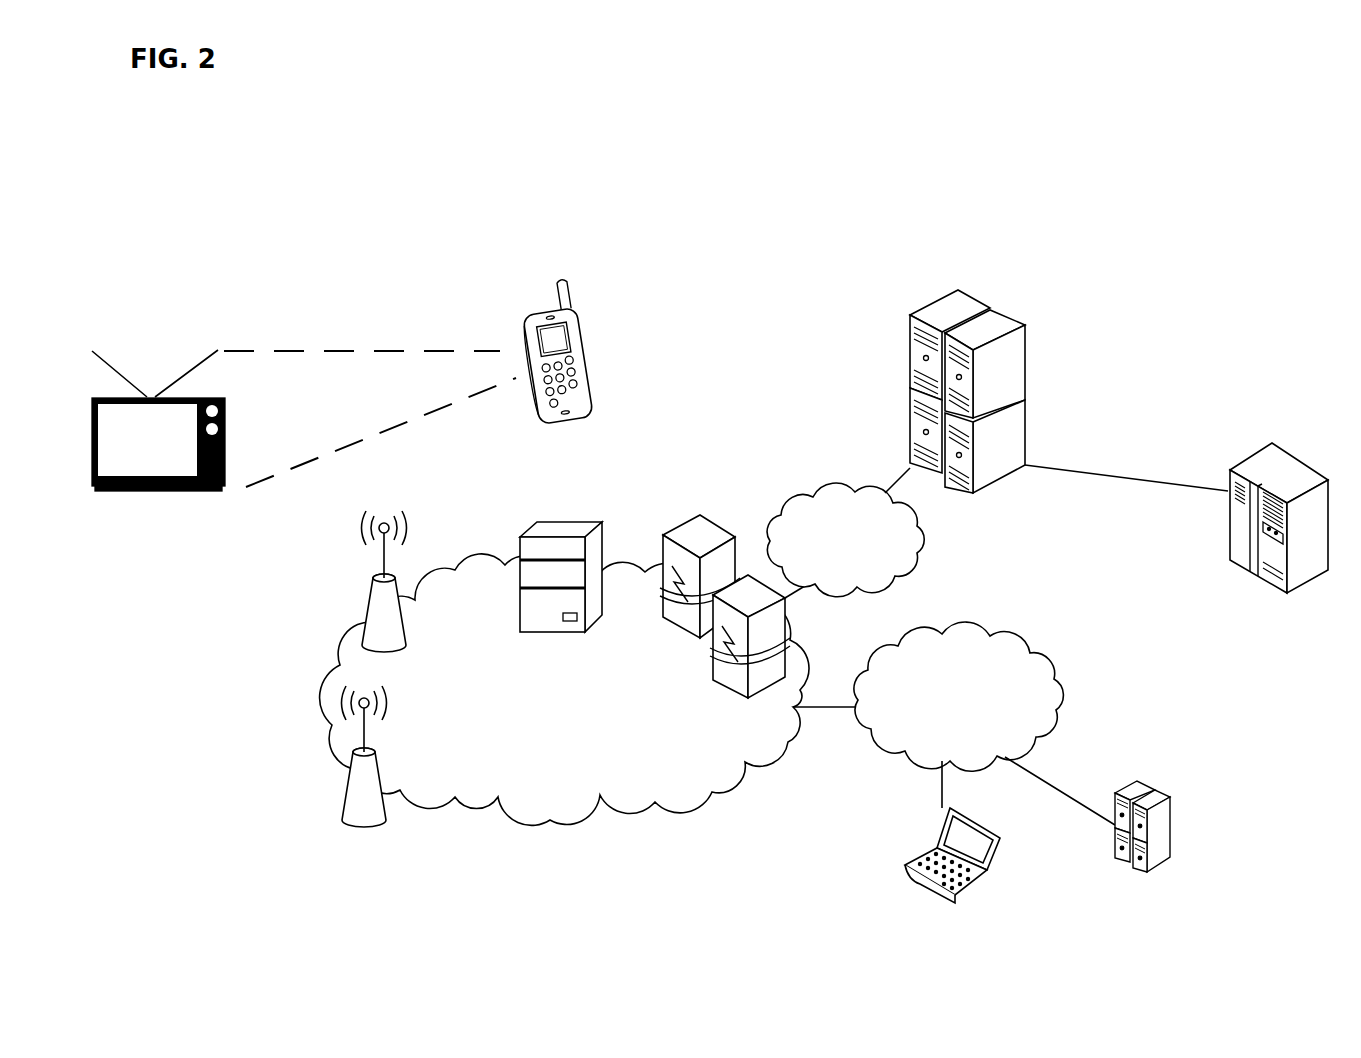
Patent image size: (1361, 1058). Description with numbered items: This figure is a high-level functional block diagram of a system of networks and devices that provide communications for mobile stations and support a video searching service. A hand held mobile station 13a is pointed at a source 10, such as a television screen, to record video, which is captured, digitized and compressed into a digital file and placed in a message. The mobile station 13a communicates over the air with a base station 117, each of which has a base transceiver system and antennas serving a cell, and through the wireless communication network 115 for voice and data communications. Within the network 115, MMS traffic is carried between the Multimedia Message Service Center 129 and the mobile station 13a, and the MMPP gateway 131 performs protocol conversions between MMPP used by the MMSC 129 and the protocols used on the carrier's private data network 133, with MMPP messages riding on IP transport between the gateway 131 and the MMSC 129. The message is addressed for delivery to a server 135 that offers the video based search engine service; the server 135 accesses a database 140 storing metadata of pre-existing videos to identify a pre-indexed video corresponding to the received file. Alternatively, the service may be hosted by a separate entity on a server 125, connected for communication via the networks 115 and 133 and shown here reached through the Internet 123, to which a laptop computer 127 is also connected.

The source 10 is at (304, 438).
The hand held mobile station 13a is at (543, 318).
The wireless communication network 115 is at (458, 580).
The base station 117 is at (372, 592).
The Multimedia Message Service Center 129 is at (520, 552).
The MMPP gateway 131 is at (662, 548).
The private data network 133 is at (921, 553).
The server 135 is at (1005, 312).
The database 140 is at (1279, 534).
The Internet 123 is at (1058, 682).
The server 125 is at (1150, 792).
The laptop computer 127 is at (948, 900).